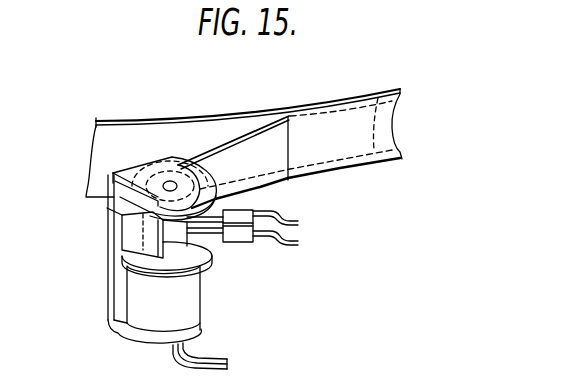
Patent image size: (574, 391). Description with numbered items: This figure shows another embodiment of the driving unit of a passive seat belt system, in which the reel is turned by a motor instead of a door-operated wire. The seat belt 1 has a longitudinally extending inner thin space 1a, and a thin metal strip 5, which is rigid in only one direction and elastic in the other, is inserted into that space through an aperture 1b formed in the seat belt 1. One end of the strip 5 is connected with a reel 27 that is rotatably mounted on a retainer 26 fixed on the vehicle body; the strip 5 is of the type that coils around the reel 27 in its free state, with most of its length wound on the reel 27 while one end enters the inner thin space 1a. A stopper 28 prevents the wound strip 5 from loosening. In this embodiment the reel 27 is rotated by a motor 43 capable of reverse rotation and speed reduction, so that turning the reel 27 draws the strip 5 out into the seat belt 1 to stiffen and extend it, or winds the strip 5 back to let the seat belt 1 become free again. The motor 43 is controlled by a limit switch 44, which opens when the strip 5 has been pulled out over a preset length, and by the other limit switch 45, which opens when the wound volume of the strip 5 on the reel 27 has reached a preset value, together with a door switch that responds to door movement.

The seat belt 1 is at (246, 130).
The inner thin space 1a is at (376, 97).
The aperture 1b is at (289, 114).
The thin metal strip 5 is at (270, 137).
The retainer 26 is at (107, 297).
The reel 27 is at (112, 209).
The stopper 28 is at (122, 229).
The motor 43 is at (200, 314).
The limit switch 44 is at (256, 211).
The limit switch 45 is at (249, 243).